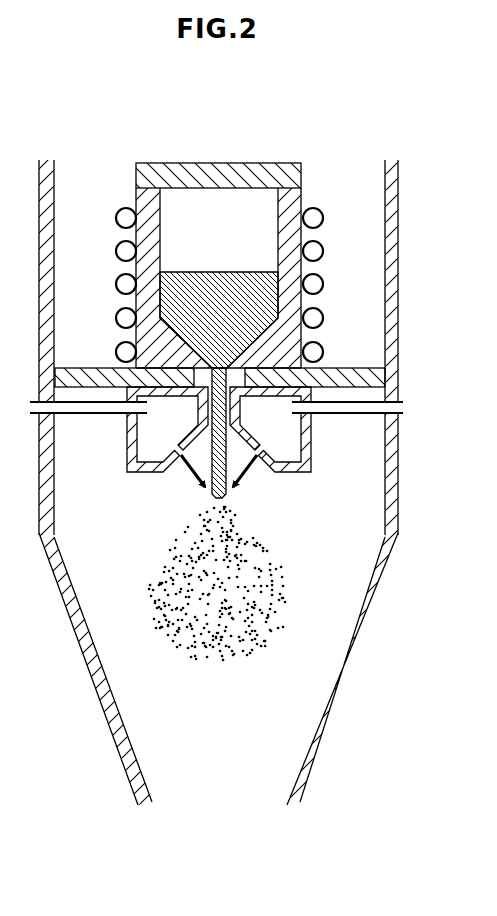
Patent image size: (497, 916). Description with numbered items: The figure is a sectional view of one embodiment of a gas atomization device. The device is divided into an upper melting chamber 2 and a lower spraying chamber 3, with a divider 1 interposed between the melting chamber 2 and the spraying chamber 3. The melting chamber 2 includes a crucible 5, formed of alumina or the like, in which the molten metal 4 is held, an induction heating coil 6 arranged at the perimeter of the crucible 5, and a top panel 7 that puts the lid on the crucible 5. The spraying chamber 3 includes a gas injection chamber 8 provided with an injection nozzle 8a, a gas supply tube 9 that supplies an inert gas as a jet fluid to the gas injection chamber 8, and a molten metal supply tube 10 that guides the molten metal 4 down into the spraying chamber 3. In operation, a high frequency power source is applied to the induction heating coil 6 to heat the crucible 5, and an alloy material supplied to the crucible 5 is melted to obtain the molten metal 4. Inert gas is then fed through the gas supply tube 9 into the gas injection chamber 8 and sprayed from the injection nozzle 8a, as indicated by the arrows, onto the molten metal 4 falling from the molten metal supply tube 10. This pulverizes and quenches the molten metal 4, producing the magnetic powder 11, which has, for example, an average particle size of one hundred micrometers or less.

The divider 1 is at (365, 370).
The melting chamber 2 is at (363, 212).
The spraying chamber 3 is at (348, 578).
The molten metal 4 is at (265, 271).
The crucible 5 is at (302, 200).
The induction heating coil 6 is at (318, 209).
The top panel 7 is at (210, 178).
The gas injection chamber 8 is at (155, 439).
The injection nozzle 8a is at (181, 458).
The gas supply tube 9 is at (77, 417).
The molten metal supply tube 10 is at (223, 467).
The magnetic powder 11 is at (263, 587).